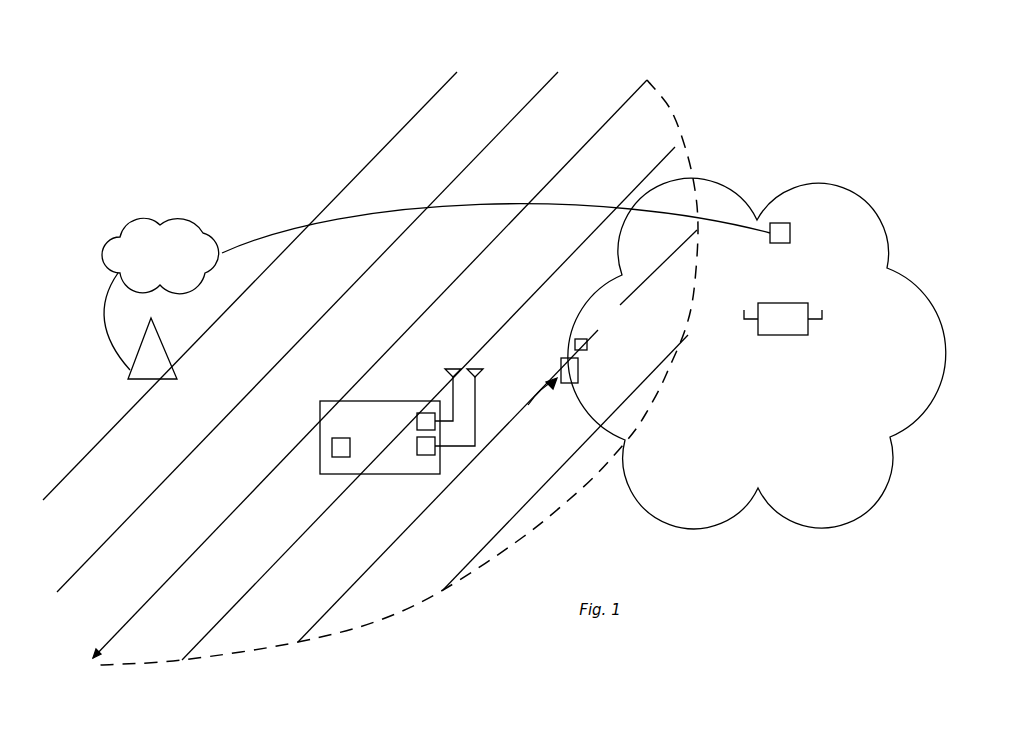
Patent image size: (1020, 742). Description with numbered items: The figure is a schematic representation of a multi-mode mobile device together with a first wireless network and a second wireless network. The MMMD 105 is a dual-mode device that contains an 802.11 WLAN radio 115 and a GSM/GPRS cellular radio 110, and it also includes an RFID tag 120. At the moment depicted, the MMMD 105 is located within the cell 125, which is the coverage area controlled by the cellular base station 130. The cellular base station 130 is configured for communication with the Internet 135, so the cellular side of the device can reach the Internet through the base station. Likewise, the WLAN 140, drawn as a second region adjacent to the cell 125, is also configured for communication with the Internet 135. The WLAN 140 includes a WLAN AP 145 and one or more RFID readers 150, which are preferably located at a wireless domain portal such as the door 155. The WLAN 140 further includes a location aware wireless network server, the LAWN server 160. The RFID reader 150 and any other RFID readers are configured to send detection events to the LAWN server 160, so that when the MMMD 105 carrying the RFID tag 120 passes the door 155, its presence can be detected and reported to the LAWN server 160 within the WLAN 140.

The MMMD 105 is at (340, 410).
The cellular radio 110 is at (426, 418).
The WLAN radio 115 is at (426, 448).
The RFID tag 120 is at (340, 450).
The cell 125 is at (676, 109).
The cellular base station 130 is at (155, 354).
The Internet 135 is at (183, 228).
The WLAN 140 is at (861, 460).
The WLAN AP 145 is at (790, 327).
The RFID reader 150 is at (587, 343).
The door 155 is at (578, 368).
The LAWN server 160 is at (778, 232).